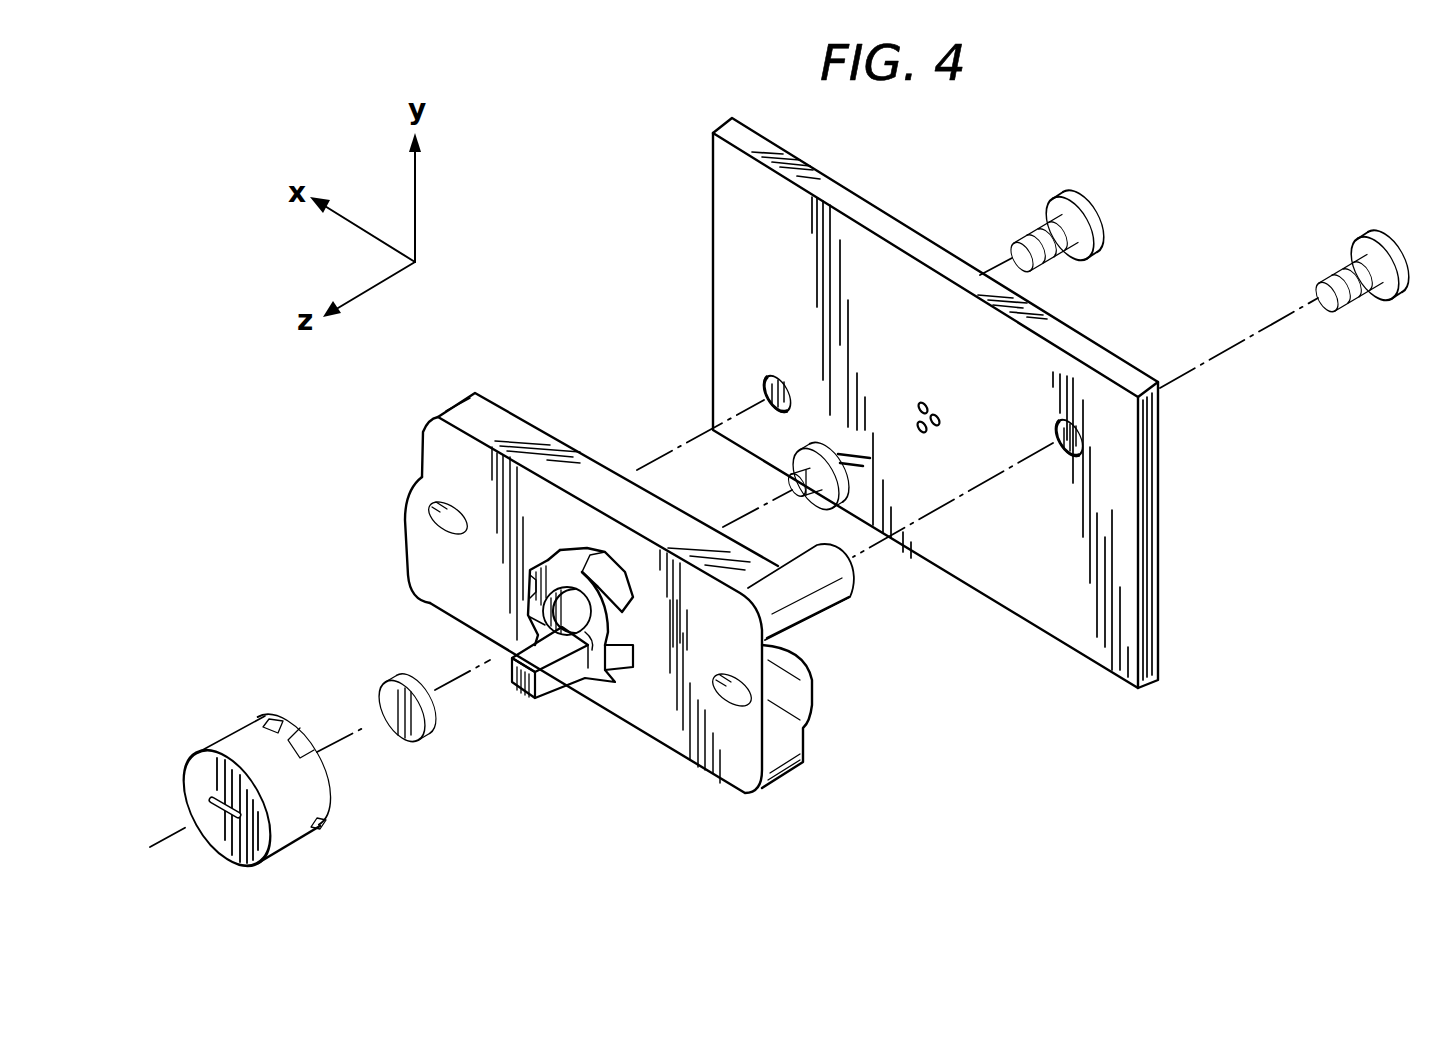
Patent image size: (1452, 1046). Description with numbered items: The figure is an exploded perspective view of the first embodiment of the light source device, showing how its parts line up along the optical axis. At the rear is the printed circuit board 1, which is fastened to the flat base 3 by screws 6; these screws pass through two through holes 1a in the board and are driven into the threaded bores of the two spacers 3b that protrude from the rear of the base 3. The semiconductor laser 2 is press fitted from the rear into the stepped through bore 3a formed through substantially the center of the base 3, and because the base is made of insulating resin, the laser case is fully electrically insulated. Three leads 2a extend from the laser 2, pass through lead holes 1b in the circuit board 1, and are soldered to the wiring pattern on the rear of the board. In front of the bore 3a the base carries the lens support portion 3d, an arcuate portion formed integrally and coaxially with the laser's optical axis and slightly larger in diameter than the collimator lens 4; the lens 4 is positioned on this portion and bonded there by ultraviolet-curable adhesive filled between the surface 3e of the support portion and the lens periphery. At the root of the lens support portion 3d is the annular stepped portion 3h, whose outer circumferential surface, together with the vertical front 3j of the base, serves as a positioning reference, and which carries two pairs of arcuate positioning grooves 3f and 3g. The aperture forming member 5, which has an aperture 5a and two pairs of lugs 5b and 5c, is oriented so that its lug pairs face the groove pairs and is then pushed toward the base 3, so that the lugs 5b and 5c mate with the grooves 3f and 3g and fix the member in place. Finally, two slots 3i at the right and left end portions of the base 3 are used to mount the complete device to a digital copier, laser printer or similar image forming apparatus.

The printed circuit board 1 is at (1052, 645).
The through holes 1a is at (770, 382).
The lead holes 1b is at (927, 404).
The semiconductor laser 2 is at (818, 505).
The leads 2a is at (850, 448).
The flat base 3 is at (691, 773).
The stepped through bore 3a is at (590, 595).
The spacers 3b is at (830, 588).
The lens support portion 3d is at (513, 690).
The surface of the lens support portion 3e is at (513, 632).
The arcuate positioning grooves 3f is at (573, 547).
The arcuate positioning grooves 3g is at (527, 593).
The annular stepped portion 3h is at (542, 553).
The slots 3i is at (420, 540).
The front of the base 3j is at (667, 733).
The collimator lens 4 is at (390, 695).
The aperture forming member 5 is at (300, 848).
The aperture 5a is at (231, 863).
The lugs 5b is at (268, 720).
The lugs 5c is at (316, 766).
The screws 6 is at (1100, 218).